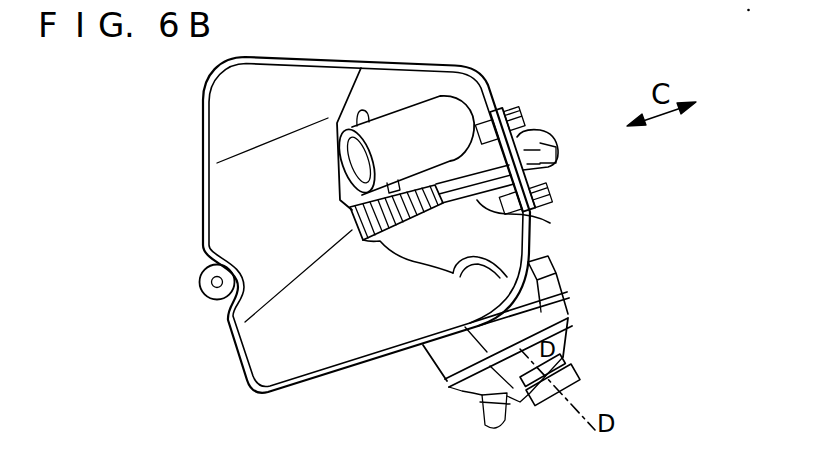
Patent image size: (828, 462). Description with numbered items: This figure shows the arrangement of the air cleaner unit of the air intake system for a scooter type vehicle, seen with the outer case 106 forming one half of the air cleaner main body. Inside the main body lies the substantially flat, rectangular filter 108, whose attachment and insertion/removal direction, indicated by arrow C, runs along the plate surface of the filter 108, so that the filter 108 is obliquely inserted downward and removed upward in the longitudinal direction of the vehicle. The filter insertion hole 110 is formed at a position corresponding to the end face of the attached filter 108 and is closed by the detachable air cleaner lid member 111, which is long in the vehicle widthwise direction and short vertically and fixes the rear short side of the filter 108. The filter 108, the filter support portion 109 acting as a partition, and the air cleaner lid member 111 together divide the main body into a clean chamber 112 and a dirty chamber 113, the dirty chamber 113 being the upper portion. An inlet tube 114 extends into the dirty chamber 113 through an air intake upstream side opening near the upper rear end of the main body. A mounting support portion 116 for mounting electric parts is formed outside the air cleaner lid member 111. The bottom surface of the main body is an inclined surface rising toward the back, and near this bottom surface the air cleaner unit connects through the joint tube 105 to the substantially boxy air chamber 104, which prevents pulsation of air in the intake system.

The air chamber 104 is at (557, 283).
The joint tube 105 is at (558, 303).
The outer case 106 is at (227, 188).
The filter 108 is at (377, 233).
The filter support portion 109 is at (548, 222).
The filter insertion hole 110 is at (493, 100).
The air cleaner lid member 111 is at (536, 177).
The clean chamber 112 is at (430, 250).
The dirty chamber 113 is at (377, 102).
The inlet tube 114 is at (405, 112).
The mounting support portion 116 is at (521, 128).